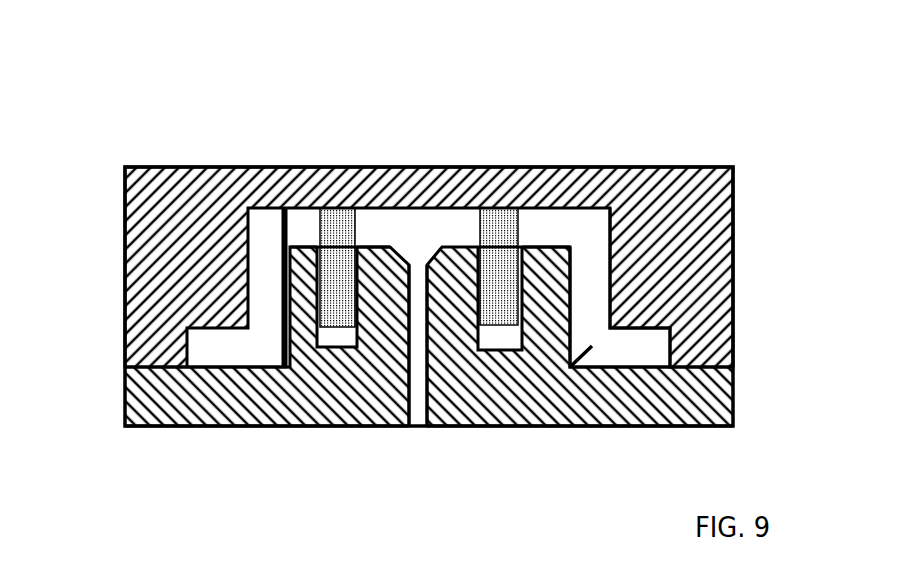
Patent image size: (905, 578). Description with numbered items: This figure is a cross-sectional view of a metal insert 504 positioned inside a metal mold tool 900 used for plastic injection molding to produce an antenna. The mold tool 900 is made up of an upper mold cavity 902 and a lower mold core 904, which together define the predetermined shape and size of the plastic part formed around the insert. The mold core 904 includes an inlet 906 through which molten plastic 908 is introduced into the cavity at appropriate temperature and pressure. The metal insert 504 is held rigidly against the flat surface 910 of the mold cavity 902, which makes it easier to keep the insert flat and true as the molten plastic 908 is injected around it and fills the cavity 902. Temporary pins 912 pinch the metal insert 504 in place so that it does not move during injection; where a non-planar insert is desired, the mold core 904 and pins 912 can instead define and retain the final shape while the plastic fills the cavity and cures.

The mold tool 900 is at (68, 508).
The mold cavity 902 is at (481, 167).
The mold core 904 is at (553, 428).
The inlet 906 is at (418, 446).
The molten plastic 908 is at (583, 218).
The flat surface 910 is at (533, 210).
The temporary pins 912 is at (476, 328).
The metal insert 504 is at (305, 210).